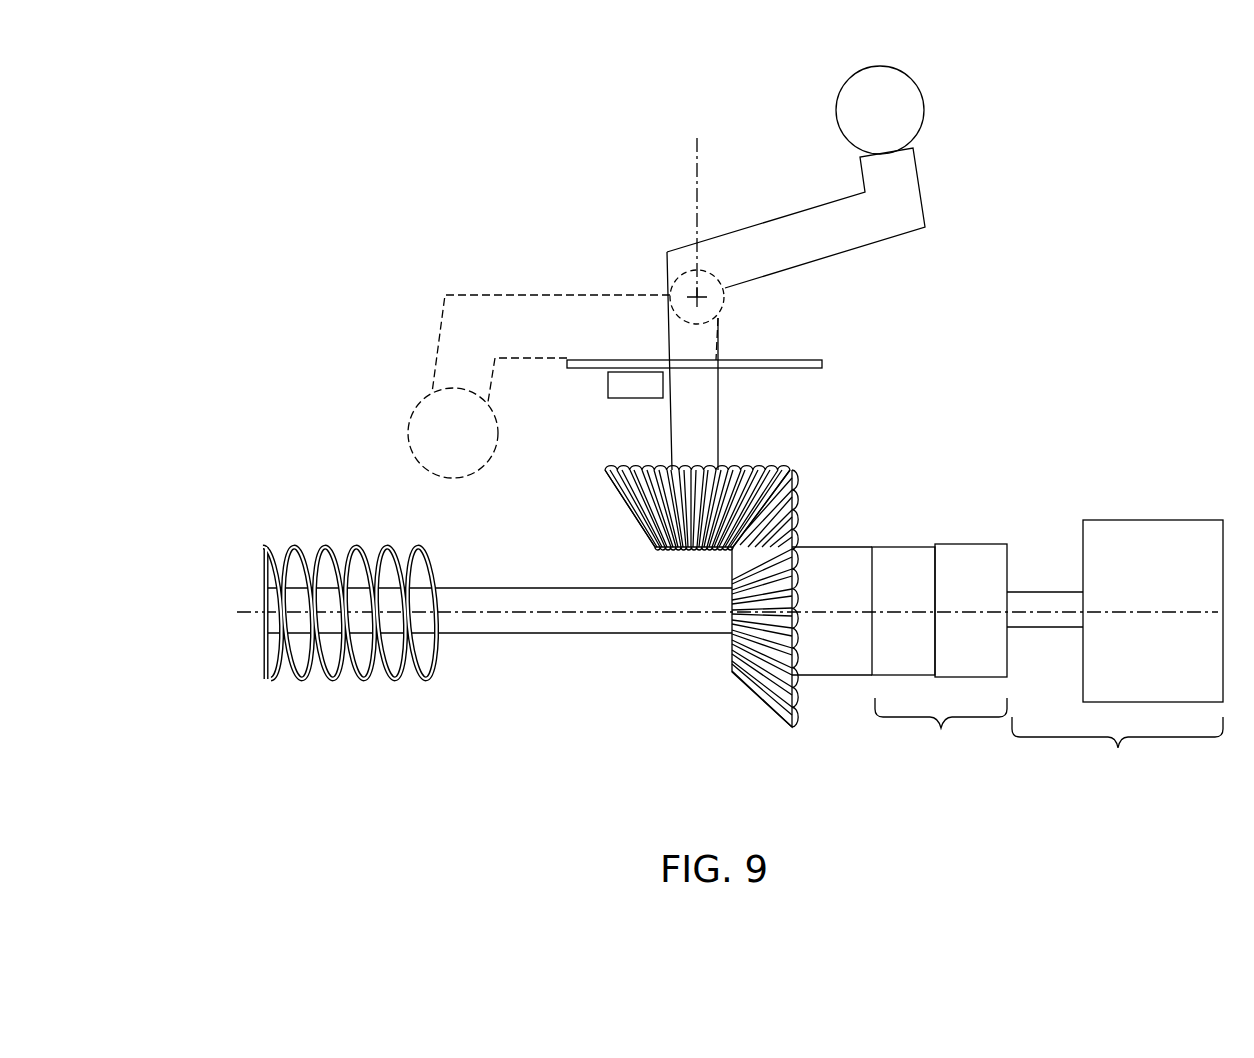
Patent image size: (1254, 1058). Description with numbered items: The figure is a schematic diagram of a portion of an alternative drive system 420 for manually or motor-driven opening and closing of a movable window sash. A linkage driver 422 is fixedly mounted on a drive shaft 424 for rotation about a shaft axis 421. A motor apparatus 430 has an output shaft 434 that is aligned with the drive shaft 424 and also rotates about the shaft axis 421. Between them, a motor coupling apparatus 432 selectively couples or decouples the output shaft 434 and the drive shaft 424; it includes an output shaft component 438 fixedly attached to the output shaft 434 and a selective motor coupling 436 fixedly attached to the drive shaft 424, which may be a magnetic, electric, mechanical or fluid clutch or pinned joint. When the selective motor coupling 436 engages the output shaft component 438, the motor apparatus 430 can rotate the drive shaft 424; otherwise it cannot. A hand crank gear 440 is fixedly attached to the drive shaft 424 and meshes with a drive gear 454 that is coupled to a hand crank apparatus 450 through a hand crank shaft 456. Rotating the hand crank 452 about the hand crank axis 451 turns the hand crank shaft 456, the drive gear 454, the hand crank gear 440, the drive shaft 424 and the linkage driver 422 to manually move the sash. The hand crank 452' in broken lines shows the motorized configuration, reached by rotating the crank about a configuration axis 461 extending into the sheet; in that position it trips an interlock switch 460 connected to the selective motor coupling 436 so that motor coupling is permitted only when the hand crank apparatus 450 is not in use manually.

The drive system 420 is at (1101, 230).
The shaft axis 421 is at (263, 612).
The linkage driver 422 is at (356, 692).
The drive shaft 424 is at (530, 634).
The motor apparatus 430 is at (1117, 650).
The motor coupling apparatus 432 is at (899, 653).
The output shaft 434 is at (1060, 628).
The selective motor coupling 436 is at (905, 547).
The output shaft component 438 is at (972, 545).
The hand crank gear 440 is at (760, 703).
The hand crank apparatus 450 is at (628, 233).
The hand crank axis 451 is at (697, 217).
The hand crank 452 is at (840, 177).
The hand crank in motorized configuration 452' is at (563, 354).
The drive gear 454 is at (630, 512).
The hand crank shaft 456 is at (719, 415).
The interlock switch 460 is at (608, 387).
The configuration axis 461 is at (720, 318).